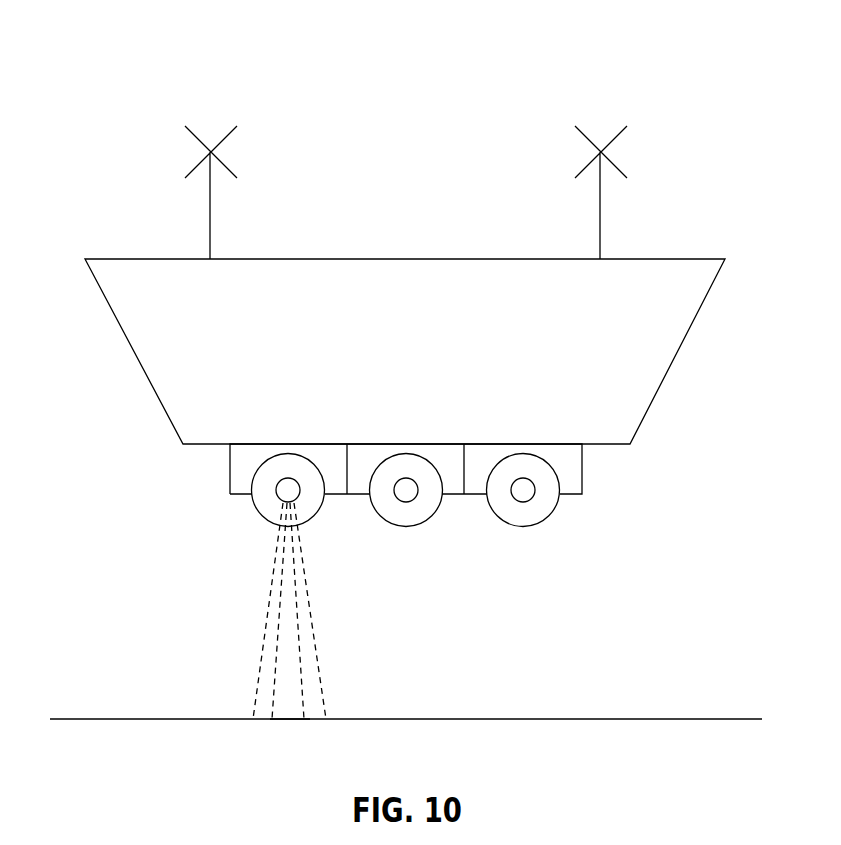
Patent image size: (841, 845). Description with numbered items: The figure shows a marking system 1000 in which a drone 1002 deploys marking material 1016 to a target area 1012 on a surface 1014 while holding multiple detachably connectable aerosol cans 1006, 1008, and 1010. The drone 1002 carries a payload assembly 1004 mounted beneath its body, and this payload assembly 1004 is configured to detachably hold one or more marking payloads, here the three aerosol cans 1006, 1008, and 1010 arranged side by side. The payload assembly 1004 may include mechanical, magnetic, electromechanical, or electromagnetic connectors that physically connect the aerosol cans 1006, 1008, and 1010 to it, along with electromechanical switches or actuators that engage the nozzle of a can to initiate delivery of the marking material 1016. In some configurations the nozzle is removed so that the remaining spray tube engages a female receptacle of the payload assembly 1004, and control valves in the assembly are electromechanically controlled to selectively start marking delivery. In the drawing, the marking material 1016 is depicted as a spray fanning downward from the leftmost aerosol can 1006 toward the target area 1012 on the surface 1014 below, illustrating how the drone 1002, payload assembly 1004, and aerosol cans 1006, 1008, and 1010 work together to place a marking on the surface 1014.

The marking system 1000 is at (158, 60).
The drone 1002 is at (176, 258).
The payload assembly 1004 is at (585, 470).
The aerosol can 1006 is at (255, 505).
The aerosol can 1008 is at (403, 527).
The aerosol can 1010 is at (523, 527).
The target area 1012 is at (283, 735).
The surface 1014 is at (605, 718).
The marking material 1016 is at (320, 668).